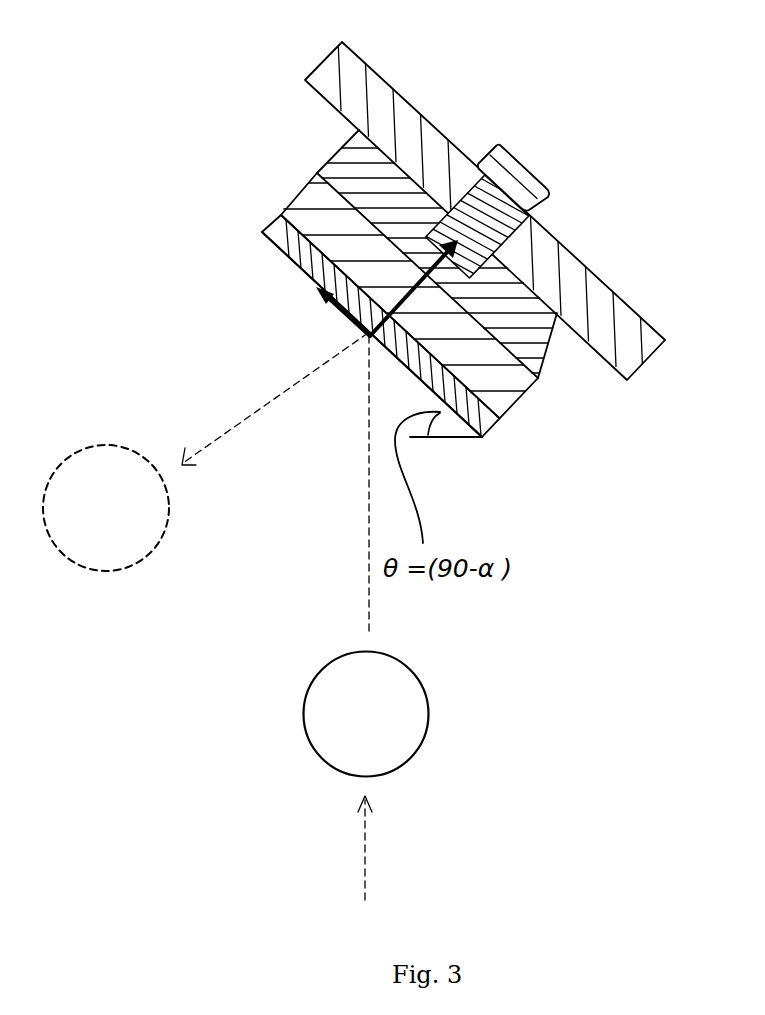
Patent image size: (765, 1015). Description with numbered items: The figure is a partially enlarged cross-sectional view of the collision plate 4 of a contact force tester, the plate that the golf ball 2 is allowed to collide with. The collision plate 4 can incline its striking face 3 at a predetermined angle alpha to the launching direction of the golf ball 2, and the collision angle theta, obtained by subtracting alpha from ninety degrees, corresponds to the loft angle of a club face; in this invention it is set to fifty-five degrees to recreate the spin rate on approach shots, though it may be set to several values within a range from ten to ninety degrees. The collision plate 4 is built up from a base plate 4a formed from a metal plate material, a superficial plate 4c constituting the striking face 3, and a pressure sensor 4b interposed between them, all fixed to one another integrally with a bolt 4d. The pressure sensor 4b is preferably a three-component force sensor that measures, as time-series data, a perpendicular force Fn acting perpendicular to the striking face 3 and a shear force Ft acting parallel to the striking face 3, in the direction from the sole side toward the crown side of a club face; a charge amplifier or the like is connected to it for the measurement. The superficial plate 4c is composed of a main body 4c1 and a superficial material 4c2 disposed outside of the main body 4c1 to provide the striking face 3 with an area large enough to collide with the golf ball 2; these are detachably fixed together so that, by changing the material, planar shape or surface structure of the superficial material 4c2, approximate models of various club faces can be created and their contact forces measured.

The golf ball 2 is at (393, 697).
The striking face 3 is at (280, 248).
The collision plate 4 is at (433, 278).
The base plate 4a is at (633, 353).
The pressure sensor 4b is at (518, 326).
The superficial plate 4c is at (392, 306).
The main body 4c1 is at (312, 195).
The superficial material 4c2 is at (282, 233).
The bolt 4d is at (537, 155).
The perpendicular force Fn is at (402, 250).
The shear force Ft is at (342, 319).